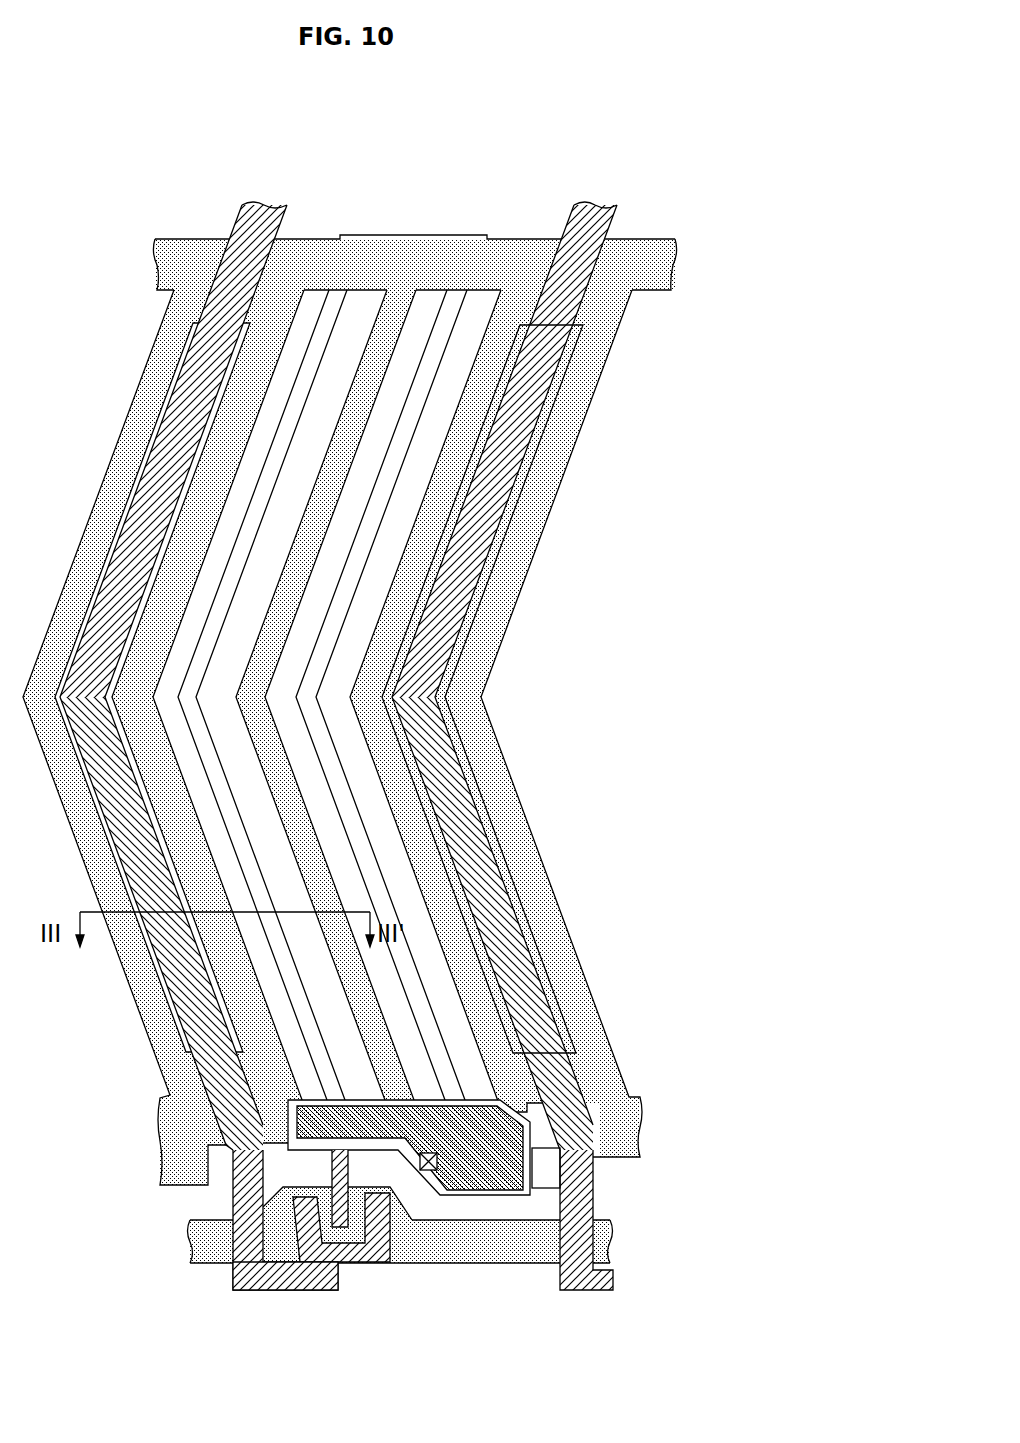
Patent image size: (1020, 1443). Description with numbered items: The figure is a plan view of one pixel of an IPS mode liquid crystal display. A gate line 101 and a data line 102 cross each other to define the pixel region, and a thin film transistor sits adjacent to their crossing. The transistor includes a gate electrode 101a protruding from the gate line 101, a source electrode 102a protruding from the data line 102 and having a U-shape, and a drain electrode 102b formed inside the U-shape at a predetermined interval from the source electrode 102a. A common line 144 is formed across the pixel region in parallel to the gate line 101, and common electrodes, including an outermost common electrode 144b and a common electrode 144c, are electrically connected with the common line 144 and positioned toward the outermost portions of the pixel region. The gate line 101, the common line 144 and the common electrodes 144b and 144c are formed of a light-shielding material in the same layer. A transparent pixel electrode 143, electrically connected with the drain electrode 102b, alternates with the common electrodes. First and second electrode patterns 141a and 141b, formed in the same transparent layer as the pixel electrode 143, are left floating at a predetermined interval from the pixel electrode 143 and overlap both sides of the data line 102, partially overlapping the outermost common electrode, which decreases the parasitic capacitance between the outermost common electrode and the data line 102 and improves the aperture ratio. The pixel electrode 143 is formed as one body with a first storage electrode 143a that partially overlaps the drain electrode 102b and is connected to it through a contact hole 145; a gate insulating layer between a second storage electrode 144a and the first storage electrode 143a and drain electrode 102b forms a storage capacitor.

The gate line 101 is at (537, 1267).
The gate electrode 101a is at (409, 1200).
The data line 102 is at (217, 1082).
The source electrode 102a is at (350, 1290).
The drain electrode 102b is at (507, 1200).
The first electrode pattern 141a is at (193, 323).
The second electrode pattern 141b is at (262, 287).
The pixel electrode 143 is at (285, 450).
The first storage electrode 143a is at (473, 1193).
The common line 144 is at (590, 1117).
The second storage electrode 144a is at (537, 1167).
The outermost common electrode 144b is at (492, 373).
The common electrode 144c is at (300, 563).
The contact hole 145 is at (426, 1180).